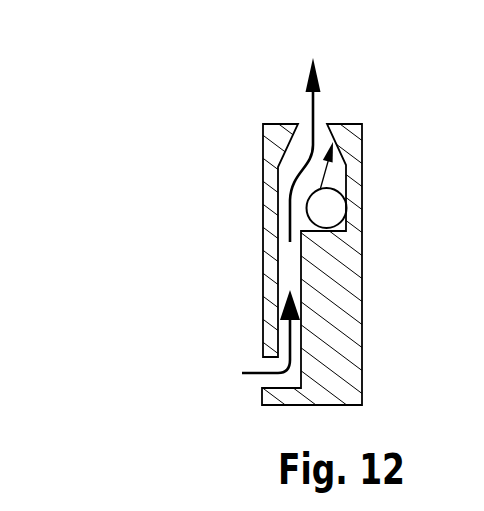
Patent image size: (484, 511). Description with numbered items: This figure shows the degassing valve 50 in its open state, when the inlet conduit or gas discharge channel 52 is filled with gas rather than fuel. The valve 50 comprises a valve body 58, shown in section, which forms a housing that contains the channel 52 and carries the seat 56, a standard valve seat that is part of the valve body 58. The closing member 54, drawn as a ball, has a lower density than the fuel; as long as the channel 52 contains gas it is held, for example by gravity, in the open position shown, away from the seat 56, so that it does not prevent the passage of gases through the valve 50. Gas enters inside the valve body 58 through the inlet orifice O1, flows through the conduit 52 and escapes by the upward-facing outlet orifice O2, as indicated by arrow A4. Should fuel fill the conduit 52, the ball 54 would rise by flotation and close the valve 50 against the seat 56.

The degassing valve 50 is at (199, 178).
The gas discharge channel 52 is at (290, 265).
The closing member 54 is at (325, 218).
The seat 56 is at (318, 202).
The valve body 58 is at (332, 350).
The inlet port O1 is at (248, 359).
The outlet port O2 is at (298, 108).
The arrow A4 is at (322, 148).